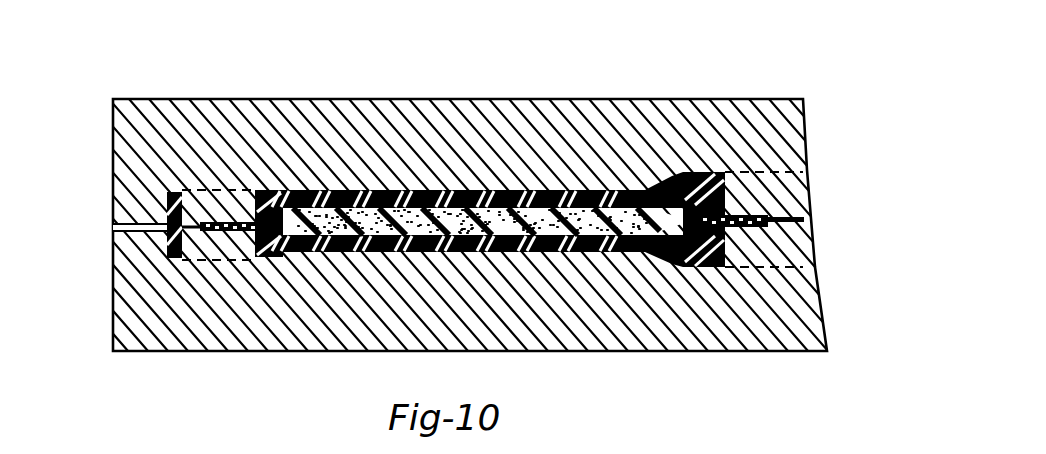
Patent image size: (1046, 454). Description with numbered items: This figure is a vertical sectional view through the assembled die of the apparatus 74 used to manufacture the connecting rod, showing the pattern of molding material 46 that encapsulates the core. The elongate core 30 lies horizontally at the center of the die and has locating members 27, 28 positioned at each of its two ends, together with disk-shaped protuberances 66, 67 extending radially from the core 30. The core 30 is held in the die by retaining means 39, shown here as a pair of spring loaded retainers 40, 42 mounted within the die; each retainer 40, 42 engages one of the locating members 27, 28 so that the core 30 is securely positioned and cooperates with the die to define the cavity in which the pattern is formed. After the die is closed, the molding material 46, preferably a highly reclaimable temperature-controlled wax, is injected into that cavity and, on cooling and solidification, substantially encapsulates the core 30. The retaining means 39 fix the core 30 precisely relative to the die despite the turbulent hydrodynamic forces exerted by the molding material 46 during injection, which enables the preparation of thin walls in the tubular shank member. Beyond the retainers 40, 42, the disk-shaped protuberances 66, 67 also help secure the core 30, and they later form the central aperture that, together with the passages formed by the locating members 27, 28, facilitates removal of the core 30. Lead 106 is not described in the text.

The apparatus 74 is at (158, 76).
The locating member 27 is at (258, 190).
The locating member 28 is at (767, 220).
The elongate core 30 is at (397, 233).
The retaining means 39 is at (220, 232).
The retainer 40 is at (210, 232).
The retainer 42 is at (766, 214).
The molding material 46 is at (452, 190).
The disk-shaped protuberance 66 is at (625, 188).
The disk-shaped protuberance 67 is at (632, 254).
The lead wire 106 is at (113, 231).